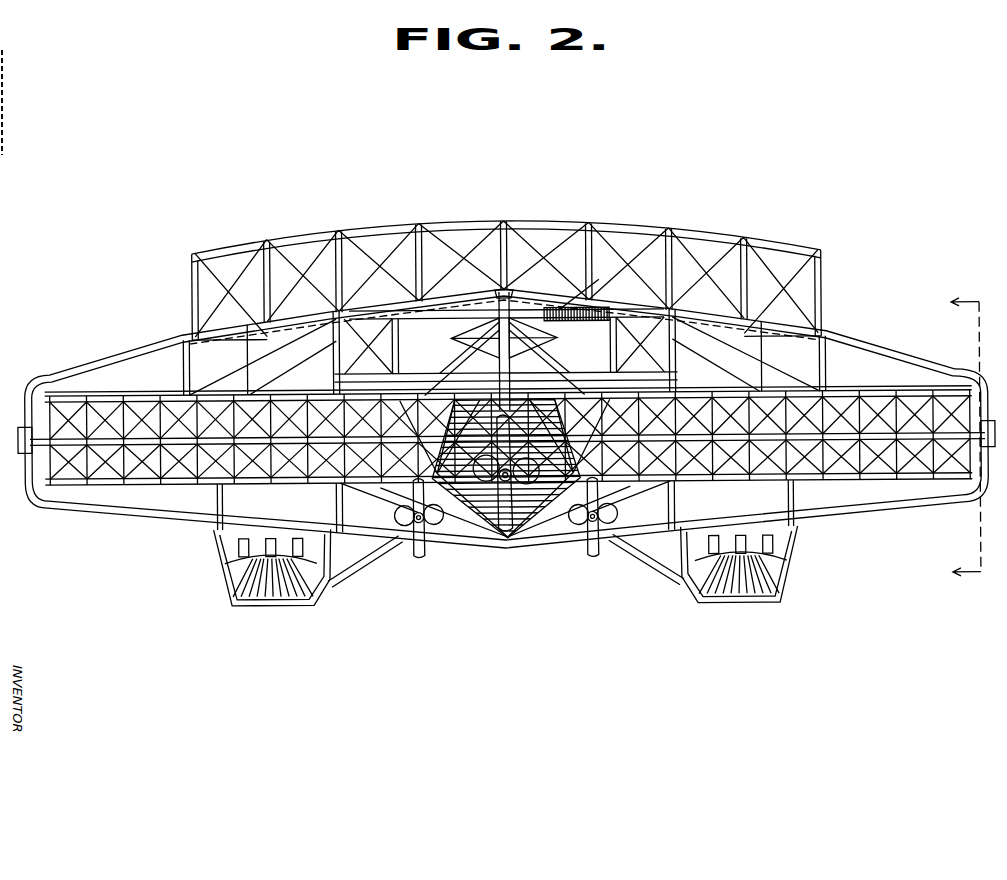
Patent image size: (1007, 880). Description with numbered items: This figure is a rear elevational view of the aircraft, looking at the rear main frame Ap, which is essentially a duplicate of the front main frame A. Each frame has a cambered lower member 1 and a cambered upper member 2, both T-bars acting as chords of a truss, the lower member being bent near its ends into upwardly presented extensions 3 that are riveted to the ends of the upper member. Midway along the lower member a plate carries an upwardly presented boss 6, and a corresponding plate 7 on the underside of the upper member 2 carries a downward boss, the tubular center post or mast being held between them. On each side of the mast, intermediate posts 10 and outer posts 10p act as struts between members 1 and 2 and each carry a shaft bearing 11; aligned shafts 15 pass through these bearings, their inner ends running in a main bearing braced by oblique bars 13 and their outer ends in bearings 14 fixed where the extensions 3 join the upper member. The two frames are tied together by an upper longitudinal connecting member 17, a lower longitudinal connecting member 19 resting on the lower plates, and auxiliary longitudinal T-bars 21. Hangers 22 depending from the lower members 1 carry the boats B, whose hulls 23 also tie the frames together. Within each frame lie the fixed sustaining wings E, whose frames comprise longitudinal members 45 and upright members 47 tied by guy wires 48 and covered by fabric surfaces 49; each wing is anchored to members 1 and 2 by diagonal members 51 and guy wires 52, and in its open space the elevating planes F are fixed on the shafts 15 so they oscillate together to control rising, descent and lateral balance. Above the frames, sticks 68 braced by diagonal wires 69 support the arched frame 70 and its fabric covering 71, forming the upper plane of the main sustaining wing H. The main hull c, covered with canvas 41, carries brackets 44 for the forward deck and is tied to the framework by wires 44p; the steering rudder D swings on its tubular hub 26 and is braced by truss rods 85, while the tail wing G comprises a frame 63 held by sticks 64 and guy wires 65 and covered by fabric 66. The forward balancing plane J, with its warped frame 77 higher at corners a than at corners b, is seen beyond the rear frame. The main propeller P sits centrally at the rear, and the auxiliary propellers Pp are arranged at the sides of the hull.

The lower member 1 is at (110, 512).
The upper member 2 is at (133, 352).
The upwardly presented extensions 3 is at (40, 488).
The boss or lug 6 is at (440, 296).
The plate or casting 7 is at (498, 290).
The intermediate posts or shaft-supports 10 is at (334, 347).
The intermediate posts or shaft-supports 10p is at (183, 372).
The shaft-bearing 11 is at (176, 483).
The diagonal or oblique members or bars 13 is at (400, 500).
The bearings 14 is at (22, 450).
The alining shafts 15 is at (57, 438).
The upper main longitudinal connecting-member 17 is at (520, 302).
The lower main longitudinal connecting-member 19 is at (950, 439).
The auxiliary longitudinal T-bars 21 is at (339, 297).
The hangers 22 is at (308, 604).
The hulls 23 is at (238, 582).
The tubular member 26 is at (455, 362).
The covering 41 is at (505, 468).
The brackets 44 is at (262, 372).
The wires 44p is at (752, 361).
The longitudinal members 45 is at (92, 393).
The upright members 47 is at (125, 460).
The stay or guy wires 48 is at (431, 415).
The wing surfaces 49 is at (212, 395).
The diagonal members 51 is at (45, 412).
The guy or stay-wires 52 is at (80, 372).
The frame 63 is at (372, 374).
The upstanding members or sticks 64 is at (505, 374).
The guy or stay wires 65 is at (517, 409).
The sections of canvas or fabric 66 is at (440, 370).
The sticks or spars 68 is at (192, 292).
The diagonal stay or guy wires 69 is at (360, 264).
The arched frame 70 is at (248, 248).
The covering 71 is at (380, 232).
The frame 77 is at (588, 282).
The truss-wires or rods 85 is at (452, 340).
The main frame A is at (85, 382).
The main frame Ap is at (838, 340).
The water-floating vessels B is at (336, 582).
The guiding or steering rudder D is at (540, 355).
The fixed lifting and sustaining wings E is at (142, 396).
The elevating planes or rudders F is at (150, 437).
The tail-wing G is at (330, 380).
The main lifting and sustaining wing H is at (612, 233).
The balancing plane or rudder J is at (504, 345).
The main propeller P is at (505, 548).
The auxiliary propellers Pp is at (420, 560).
The corners a is at (640, 290).
The corners b is at (576, 322).
The main hull c is at (611, 356).